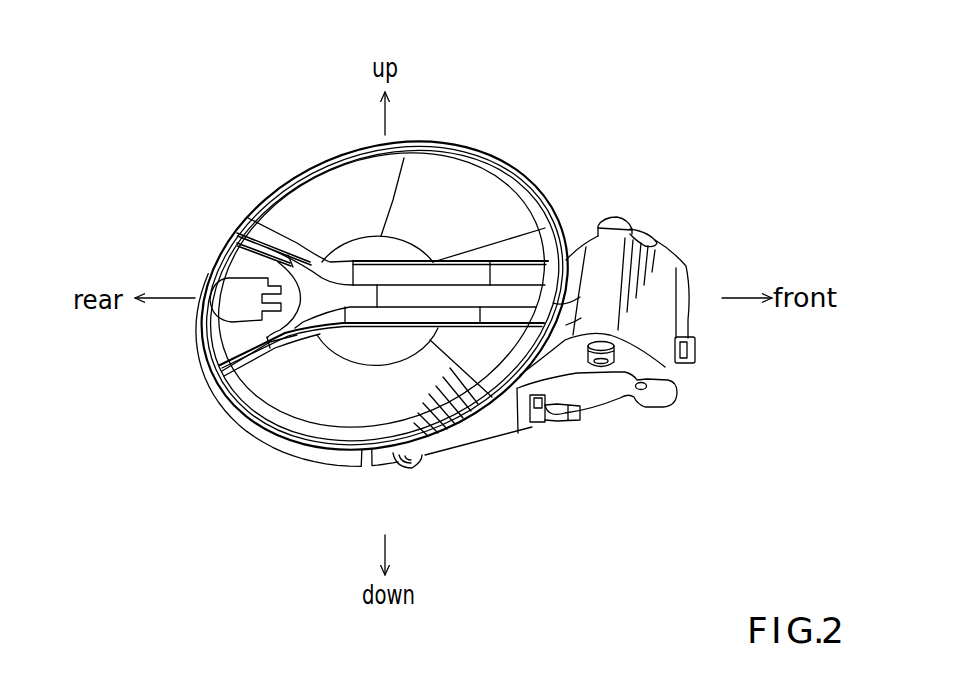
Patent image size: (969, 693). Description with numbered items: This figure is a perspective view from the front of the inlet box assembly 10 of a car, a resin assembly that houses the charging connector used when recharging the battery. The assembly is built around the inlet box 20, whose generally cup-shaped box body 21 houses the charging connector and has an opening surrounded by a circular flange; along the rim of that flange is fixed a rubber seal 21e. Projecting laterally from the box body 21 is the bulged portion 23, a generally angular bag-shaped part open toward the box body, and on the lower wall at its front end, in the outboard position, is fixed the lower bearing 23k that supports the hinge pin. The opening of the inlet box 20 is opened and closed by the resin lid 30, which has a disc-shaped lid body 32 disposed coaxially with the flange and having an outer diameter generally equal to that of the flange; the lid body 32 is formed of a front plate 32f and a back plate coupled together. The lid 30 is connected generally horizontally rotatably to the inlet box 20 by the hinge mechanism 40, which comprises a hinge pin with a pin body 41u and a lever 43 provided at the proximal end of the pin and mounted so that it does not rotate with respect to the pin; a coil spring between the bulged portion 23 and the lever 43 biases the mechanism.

The inlet box assembly 10 is at (564, 152).
The inlet box 20 is at (530, 462).
The box body 21 is at (487, 424).
The seal 21e is at (298, 467).
The bulged portion 23 is at (647, 404).
The lower bearing 23k is at (680, 366).
The lid 30 is at (460, 147).
The lid body 32 is at (345, 184).
The front plate 32f is at (307, 213).
The hinge mechanism 40 is at (621, 212).
The pin body 41u is at (600, 369).
The lever 43 is at (650, 231).